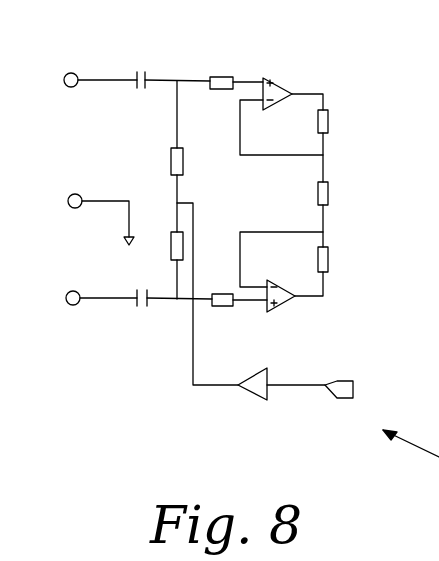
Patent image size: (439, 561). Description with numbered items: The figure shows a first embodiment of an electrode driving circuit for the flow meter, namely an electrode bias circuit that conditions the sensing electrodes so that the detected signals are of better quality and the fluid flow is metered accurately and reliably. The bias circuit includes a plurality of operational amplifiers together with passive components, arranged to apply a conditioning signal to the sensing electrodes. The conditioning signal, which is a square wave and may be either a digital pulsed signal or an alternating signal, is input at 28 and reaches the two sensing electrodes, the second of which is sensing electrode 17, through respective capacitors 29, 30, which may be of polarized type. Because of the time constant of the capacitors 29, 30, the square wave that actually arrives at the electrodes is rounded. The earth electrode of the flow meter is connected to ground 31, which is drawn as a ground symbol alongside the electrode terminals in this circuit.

The sensing electrode 17 is at (66, 308).
The conditioning signal input 28 is at (347, 385).
The capacitor 29 is at (137, 72).
The capacitor 30 is at (147, 304).
The ground 31 is at (125, 242).